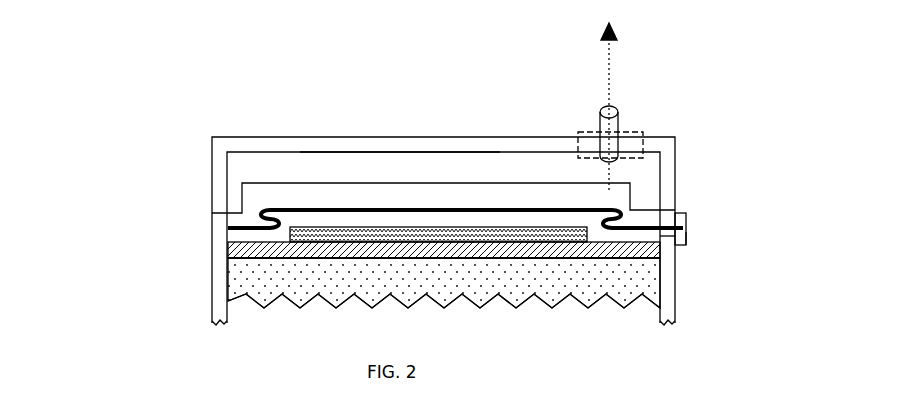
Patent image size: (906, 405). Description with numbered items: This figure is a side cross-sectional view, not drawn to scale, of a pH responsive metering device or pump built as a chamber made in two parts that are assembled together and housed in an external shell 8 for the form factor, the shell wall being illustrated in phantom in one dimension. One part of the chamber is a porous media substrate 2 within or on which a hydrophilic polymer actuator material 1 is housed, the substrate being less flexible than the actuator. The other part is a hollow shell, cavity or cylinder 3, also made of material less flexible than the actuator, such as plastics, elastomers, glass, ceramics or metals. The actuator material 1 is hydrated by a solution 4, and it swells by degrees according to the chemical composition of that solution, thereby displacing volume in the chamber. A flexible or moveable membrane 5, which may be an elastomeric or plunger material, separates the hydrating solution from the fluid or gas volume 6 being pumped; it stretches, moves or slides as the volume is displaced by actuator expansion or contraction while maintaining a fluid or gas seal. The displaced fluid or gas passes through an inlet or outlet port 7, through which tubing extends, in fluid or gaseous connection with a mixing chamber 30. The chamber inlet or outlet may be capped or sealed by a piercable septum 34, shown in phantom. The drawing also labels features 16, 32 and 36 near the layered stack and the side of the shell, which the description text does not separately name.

The external shell 8 is at (204, 144).
The hollow shell, cavity or cylinder 3 is at (378, 153).
The mixing chamber 30 is at (654, 172).
The fluid or gas volume 6 is at (577, 189).
The flexible or moveable membrane 5 is at (286, 198).
The actuator material 1 is at (420, 242).
The porous media substrate 2 is at (272, 256).
The interface layer 16 is at (487, 258).
The solution 4 is at (592, 285).
The inlet or outlet port 7 is at (628, 129).
The piercable septum 34 is at (650, 133).
The terminal 32 is at (686, 218).
The terminal contact 36 is at (686, 237).